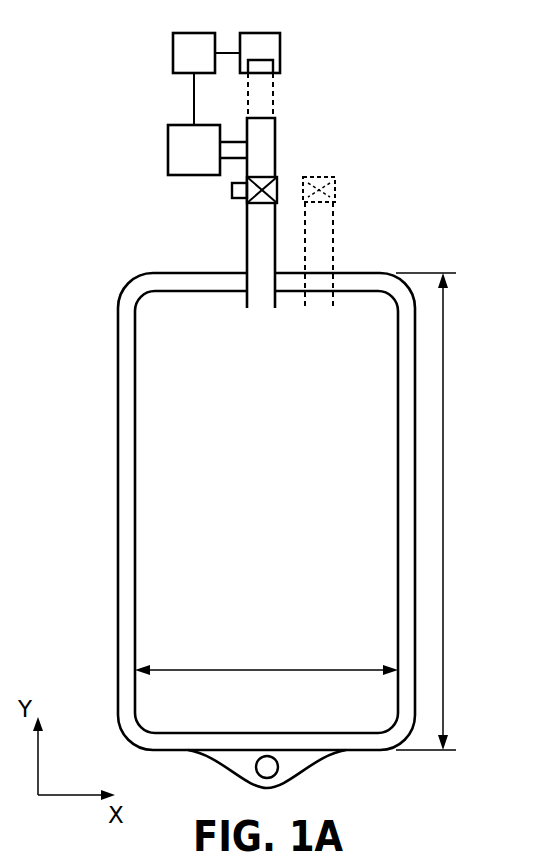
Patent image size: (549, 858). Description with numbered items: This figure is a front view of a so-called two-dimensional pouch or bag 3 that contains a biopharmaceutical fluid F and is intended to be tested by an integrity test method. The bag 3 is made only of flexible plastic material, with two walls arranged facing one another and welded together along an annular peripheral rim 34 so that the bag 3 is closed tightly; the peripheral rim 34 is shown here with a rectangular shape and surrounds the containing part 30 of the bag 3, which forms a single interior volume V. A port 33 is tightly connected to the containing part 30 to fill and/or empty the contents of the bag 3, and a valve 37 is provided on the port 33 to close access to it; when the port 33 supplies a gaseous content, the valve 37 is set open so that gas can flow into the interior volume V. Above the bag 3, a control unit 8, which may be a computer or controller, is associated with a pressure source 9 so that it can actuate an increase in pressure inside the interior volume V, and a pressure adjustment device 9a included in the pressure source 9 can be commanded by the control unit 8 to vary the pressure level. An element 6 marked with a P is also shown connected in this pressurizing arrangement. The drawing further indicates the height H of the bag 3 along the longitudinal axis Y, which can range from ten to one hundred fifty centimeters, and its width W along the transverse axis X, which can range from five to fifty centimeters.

The bag 3 is at (406, 247).
The pump 6 is at (168, 140).
The control unit 8 is at (173, 48).
The pressure source 9 is at (280, 43).
The pressure adjustment device 9a is at (273, 68).
The containing part 30 is at (146, 289).
The port 33 is at (247, 243).
The peripheral rim 34 is at (128, 389).
The valve 37 is at (277, 178).
The biopharmaceutical fluid F is at (276, 501).
The interior volume V is at (180, 517).
The height H is at (433, 511).
The width W is at (266, 659).